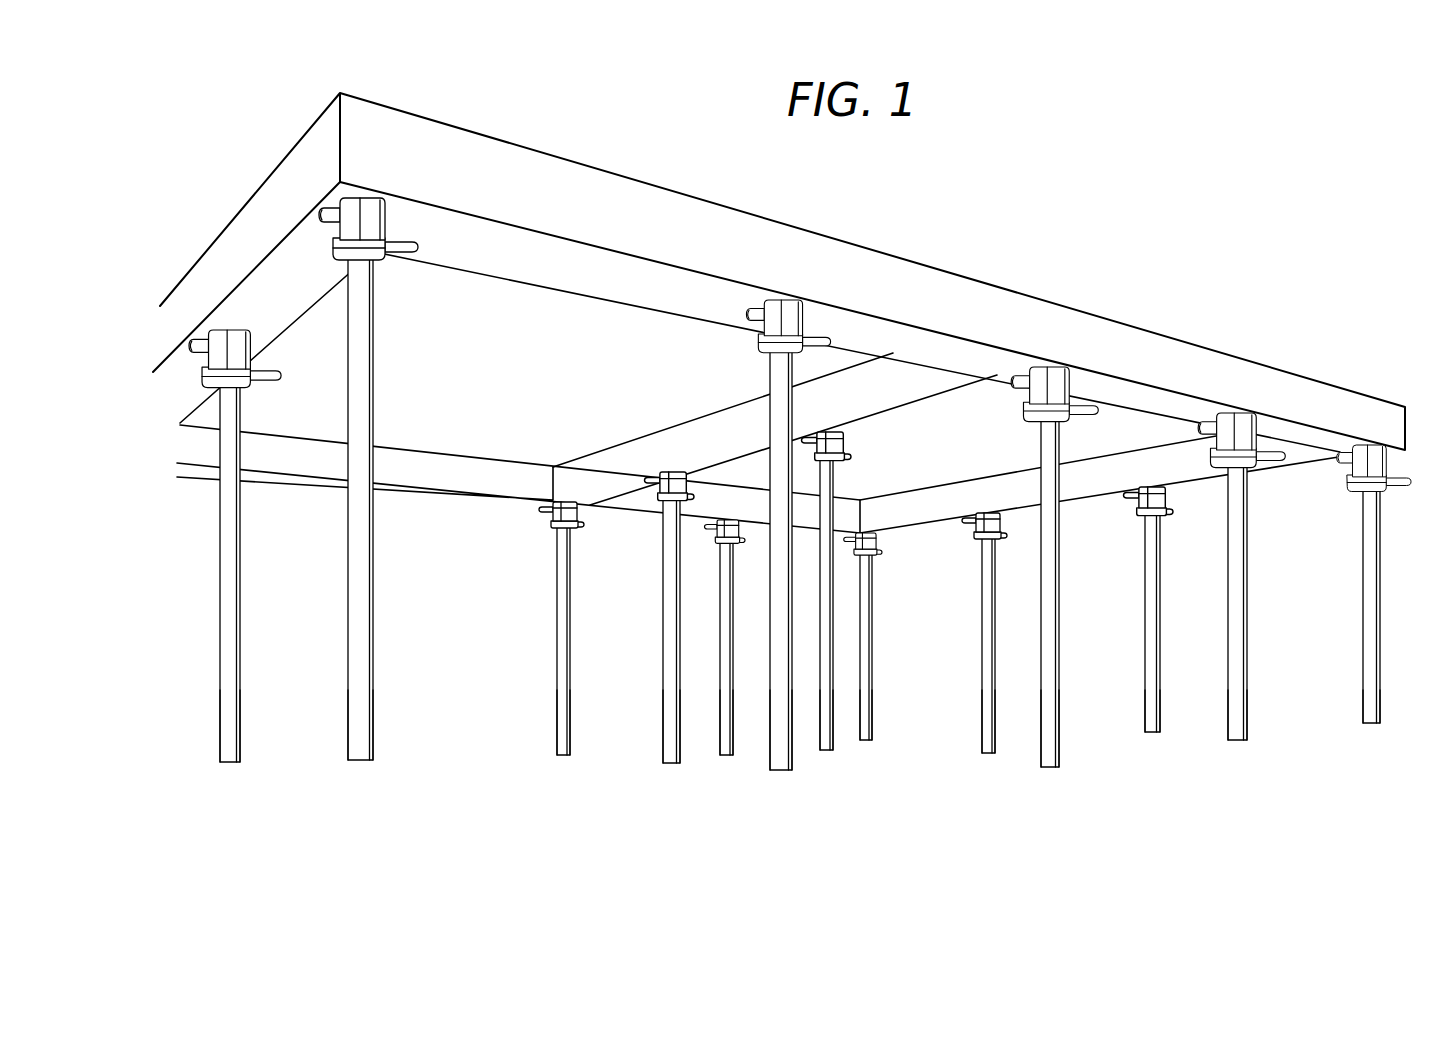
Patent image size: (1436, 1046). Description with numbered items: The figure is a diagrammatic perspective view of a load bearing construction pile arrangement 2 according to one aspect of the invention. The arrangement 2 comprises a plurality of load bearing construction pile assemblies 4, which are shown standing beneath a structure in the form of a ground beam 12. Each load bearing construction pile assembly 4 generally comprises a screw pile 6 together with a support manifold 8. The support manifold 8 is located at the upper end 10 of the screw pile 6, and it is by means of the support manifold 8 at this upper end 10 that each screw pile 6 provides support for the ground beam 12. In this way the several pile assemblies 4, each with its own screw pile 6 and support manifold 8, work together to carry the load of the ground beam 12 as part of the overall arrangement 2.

The load bearing construction pile arrangement 2 is at (1075, 222).
The load bearing construction pile assembly 4 is at (345, 637).
The screw pile 6 is at (355, 711).
The support manifold 8 is at (393, 268).
The upper end 10 is at (340, 313).
The ground beam 12 is at (463, 122).